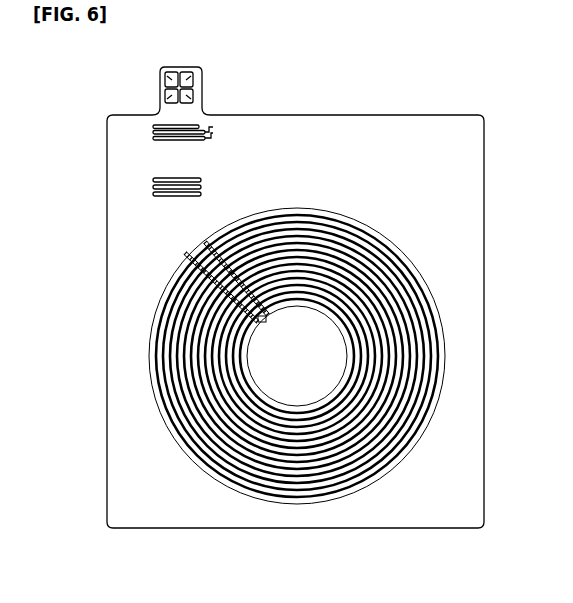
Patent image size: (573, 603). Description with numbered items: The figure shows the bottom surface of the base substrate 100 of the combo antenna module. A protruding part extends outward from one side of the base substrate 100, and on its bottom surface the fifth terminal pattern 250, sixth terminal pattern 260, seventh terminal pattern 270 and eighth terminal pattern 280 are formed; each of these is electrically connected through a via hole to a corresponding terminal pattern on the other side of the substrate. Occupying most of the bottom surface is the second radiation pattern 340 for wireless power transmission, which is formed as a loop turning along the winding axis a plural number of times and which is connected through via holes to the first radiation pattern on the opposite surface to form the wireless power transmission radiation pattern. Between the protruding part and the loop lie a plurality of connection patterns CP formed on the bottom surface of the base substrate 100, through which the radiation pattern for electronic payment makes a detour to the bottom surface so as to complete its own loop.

The base substrate 100 is at (107, 256).
The fifth terminal pattern 250 is at (165, 95).
The sixth terminal pattern 260 is at (193, 95).
The seventh terminal pattern 270 is at (193, 75).
The eighth terminal pattern 280 is at (165, 75).
The second radiation pattern for wireless power transmission 340 is at (150, 358).
The connection pattern CP is at (153, 195).